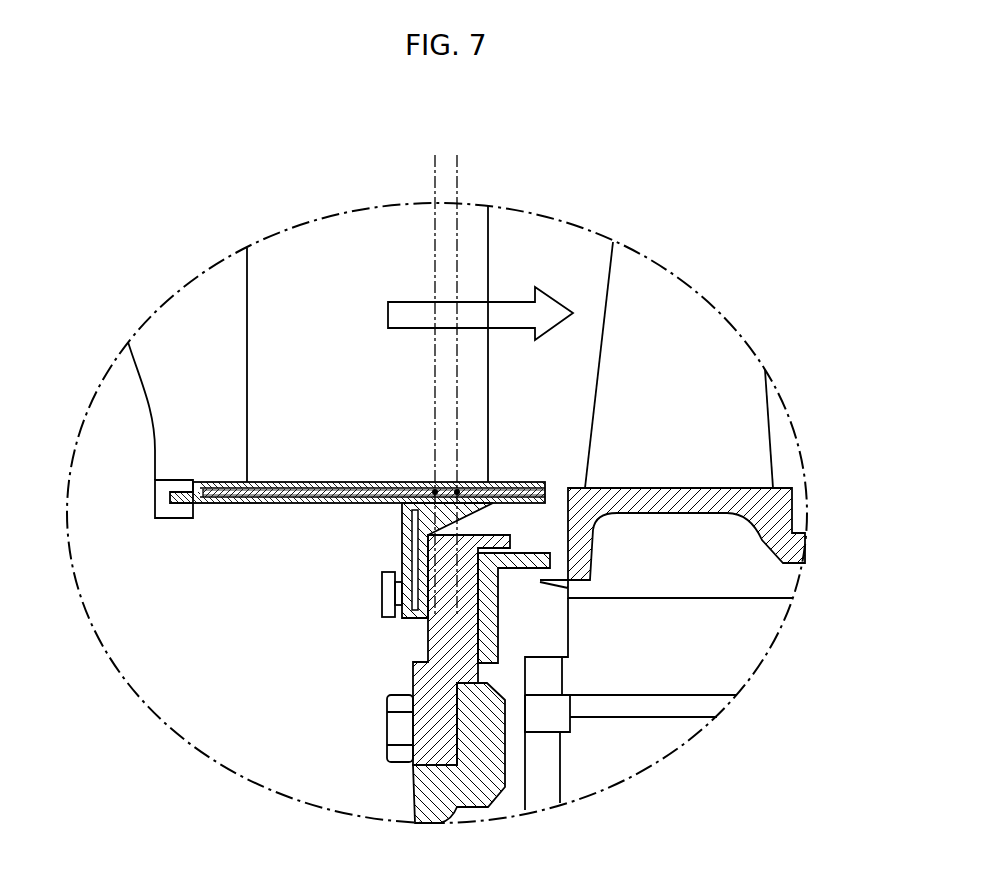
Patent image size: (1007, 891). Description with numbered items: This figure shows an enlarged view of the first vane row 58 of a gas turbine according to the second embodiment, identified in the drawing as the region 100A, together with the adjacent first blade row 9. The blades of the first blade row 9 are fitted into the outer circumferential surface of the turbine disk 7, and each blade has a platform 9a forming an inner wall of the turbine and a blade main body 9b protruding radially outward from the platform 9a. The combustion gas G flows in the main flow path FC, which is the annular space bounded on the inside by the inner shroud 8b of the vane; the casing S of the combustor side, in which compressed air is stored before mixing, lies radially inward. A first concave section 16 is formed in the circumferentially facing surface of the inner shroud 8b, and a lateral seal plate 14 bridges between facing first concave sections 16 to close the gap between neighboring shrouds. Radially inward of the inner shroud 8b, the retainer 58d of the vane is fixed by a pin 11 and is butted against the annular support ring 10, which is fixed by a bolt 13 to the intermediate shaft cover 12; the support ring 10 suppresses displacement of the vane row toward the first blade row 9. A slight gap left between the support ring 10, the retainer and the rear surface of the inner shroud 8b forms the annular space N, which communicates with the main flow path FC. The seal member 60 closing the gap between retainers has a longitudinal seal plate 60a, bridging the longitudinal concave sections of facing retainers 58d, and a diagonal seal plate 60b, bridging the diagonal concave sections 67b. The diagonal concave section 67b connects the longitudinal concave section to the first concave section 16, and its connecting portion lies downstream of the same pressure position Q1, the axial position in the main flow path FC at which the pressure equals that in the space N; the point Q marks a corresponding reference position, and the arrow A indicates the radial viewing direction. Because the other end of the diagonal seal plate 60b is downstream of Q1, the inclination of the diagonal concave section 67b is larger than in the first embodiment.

The gas turbine section 100A is at (672, 247).
The first vane row 58 is at (247, 330).
The blade main body 9b is at (708, 353).
The first blade row 9 is at (742, 440).
The platform 9a is at (693, 513).
The turbine disk 7 is at (678, 708).
The first concave section 16 is at (298, 494).
The seal member 60 is at (270, 516).
The longitudinal seal plate 60a is at (411, 527).
The diagonal seal plate 60b is at (411, 518).
The lateral seal plate 14 is at (215, 505).
The inner shroud 8b is at (240, 505).
The diagonal concave section 67b is at (410, 540).
The retainer 58d is at (404, 562).
The pin 11 is at (382, 597).
The support ring 10 is at (430, 634).
The bolt 13 is at (400, 735).
The intermediate shaft cover 12 is at (420, 807).
The combustion gas G is at (401, 302).
The main flow path FC is at (561, 262).
The direction A is at (347, 473).
The same pressure position Q1 is at (432, 488).
The point Q is at (462, 490).
The space N is at (523, 535).
The casing S is at (208, 705).